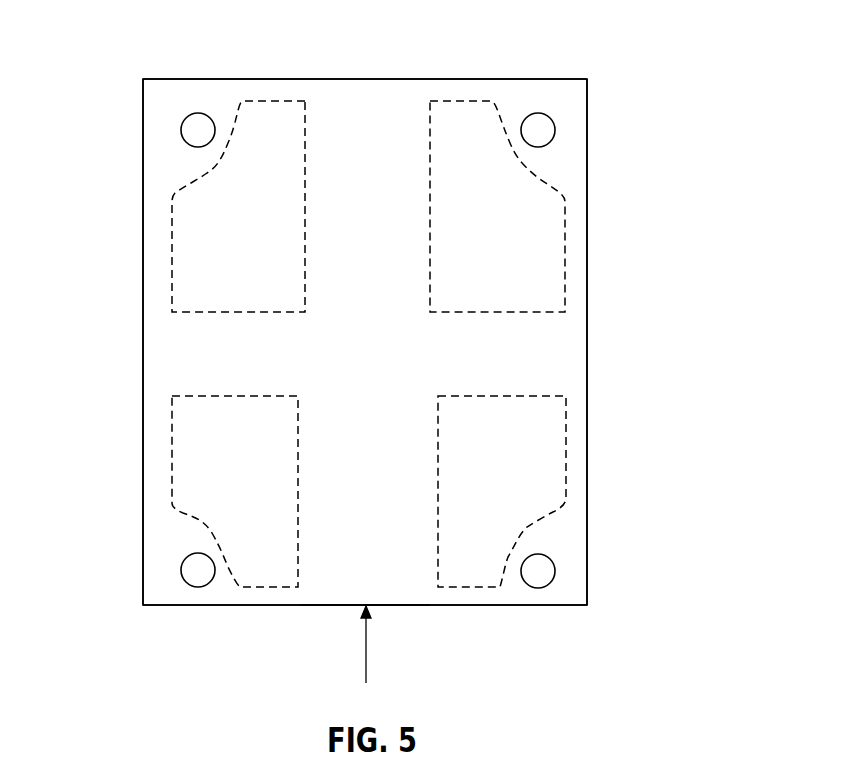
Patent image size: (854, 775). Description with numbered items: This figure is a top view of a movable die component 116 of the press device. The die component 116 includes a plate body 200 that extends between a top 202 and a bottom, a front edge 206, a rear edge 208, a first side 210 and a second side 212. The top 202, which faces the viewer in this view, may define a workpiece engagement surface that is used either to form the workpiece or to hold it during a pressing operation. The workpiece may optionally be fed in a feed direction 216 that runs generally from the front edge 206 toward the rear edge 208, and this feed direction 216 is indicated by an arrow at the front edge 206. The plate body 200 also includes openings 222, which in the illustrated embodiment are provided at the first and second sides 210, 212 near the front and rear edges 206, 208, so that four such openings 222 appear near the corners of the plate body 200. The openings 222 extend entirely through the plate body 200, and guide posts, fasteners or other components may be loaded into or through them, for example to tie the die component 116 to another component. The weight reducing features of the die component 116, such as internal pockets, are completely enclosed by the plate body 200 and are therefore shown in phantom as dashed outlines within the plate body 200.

The movable die component 116 is at (670, 130).
The plate body 200 is at (570, 349).
The top 202 is at (355, 577).
The front edge 206 is at (394, 78).
The rear edge 208 is at (432, 606).
The first side 210 is at (587, 281).
The second side 212 is at (143, 350).
The feed direction 216 is at (367, 640).
The openings 222 is at (543, 104).